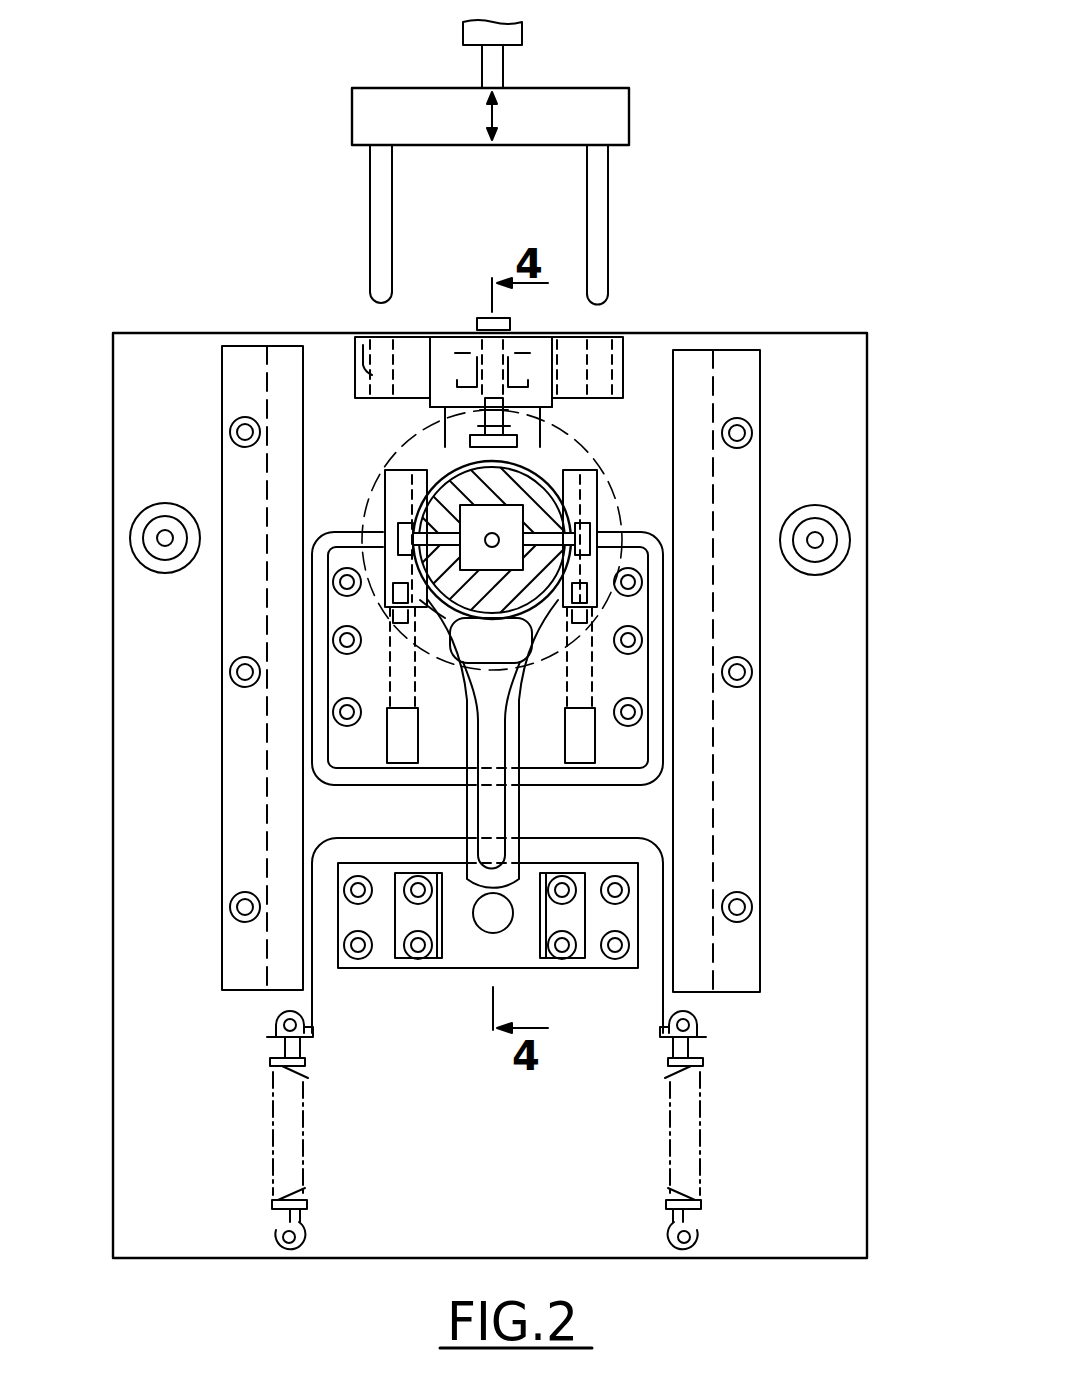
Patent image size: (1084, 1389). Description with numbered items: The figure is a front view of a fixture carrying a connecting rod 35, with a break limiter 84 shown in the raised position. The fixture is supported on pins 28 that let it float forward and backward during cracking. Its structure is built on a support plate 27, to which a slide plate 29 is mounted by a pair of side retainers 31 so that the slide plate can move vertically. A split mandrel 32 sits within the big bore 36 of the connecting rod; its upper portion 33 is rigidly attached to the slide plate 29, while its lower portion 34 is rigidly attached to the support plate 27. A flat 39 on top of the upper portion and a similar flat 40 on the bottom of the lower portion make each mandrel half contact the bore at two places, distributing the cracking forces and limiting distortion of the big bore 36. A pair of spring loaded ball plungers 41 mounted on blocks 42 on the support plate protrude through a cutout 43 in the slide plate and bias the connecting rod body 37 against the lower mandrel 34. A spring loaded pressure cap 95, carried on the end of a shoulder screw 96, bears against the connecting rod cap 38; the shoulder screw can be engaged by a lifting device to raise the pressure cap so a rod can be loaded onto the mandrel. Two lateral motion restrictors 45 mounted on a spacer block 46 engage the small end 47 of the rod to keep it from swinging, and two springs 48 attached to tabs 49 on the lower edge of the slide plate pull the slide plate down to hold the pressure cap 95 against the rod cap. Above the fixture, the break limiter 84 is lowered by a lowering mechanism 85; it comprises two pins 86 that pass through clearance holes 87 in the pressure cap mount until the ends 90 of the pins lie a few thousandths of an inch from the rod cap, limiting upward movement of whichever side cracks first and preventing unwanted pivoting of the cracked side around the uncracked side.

The support plate 27 is at (855, 407).
The pins 28 is at (165, 502).
The slide plate 29 is at (325, 337).
The side retainers 31 is at (230, 377).
The split mandrel 32 is at (540, 490).
The upper portion 33 is at (585, 485).
The lower portion 34 is at (445, 618).
The connecting rod 35 is at (478, 801).
The big bore 36 is at (440, 465).
The connecting rod body 37 is at (466, 758).
The connecting rod cap 38 is at (443, 463).
The flat 39 is at (520, 445).
The flat 40 is at (491, 640).
The spring loaded ball plungers 41 is at (585, 690).
The blocks 42 is at (357, 763).
The cutout 43 is at (545, 780).
The lateral motion restrictors 45 is at (407, 923).
The spacer block 46 is at (378, 953).
The small end 47 is at (477, 948).
The springs 48 is at (305, 1113).
The tabs 49 is at (280, 1000).
The break limiter 84 is at (595, 70).
The lowering mechanism 85 is at (518, 33).
The pins 86 is at (377, 163).
The clearance holes 87 is at (357, 338).
The ends 90 is at (390, 300).
The pressure cap 95 is at (493, 467).
The shoulder screw 96 is at (483, 317).